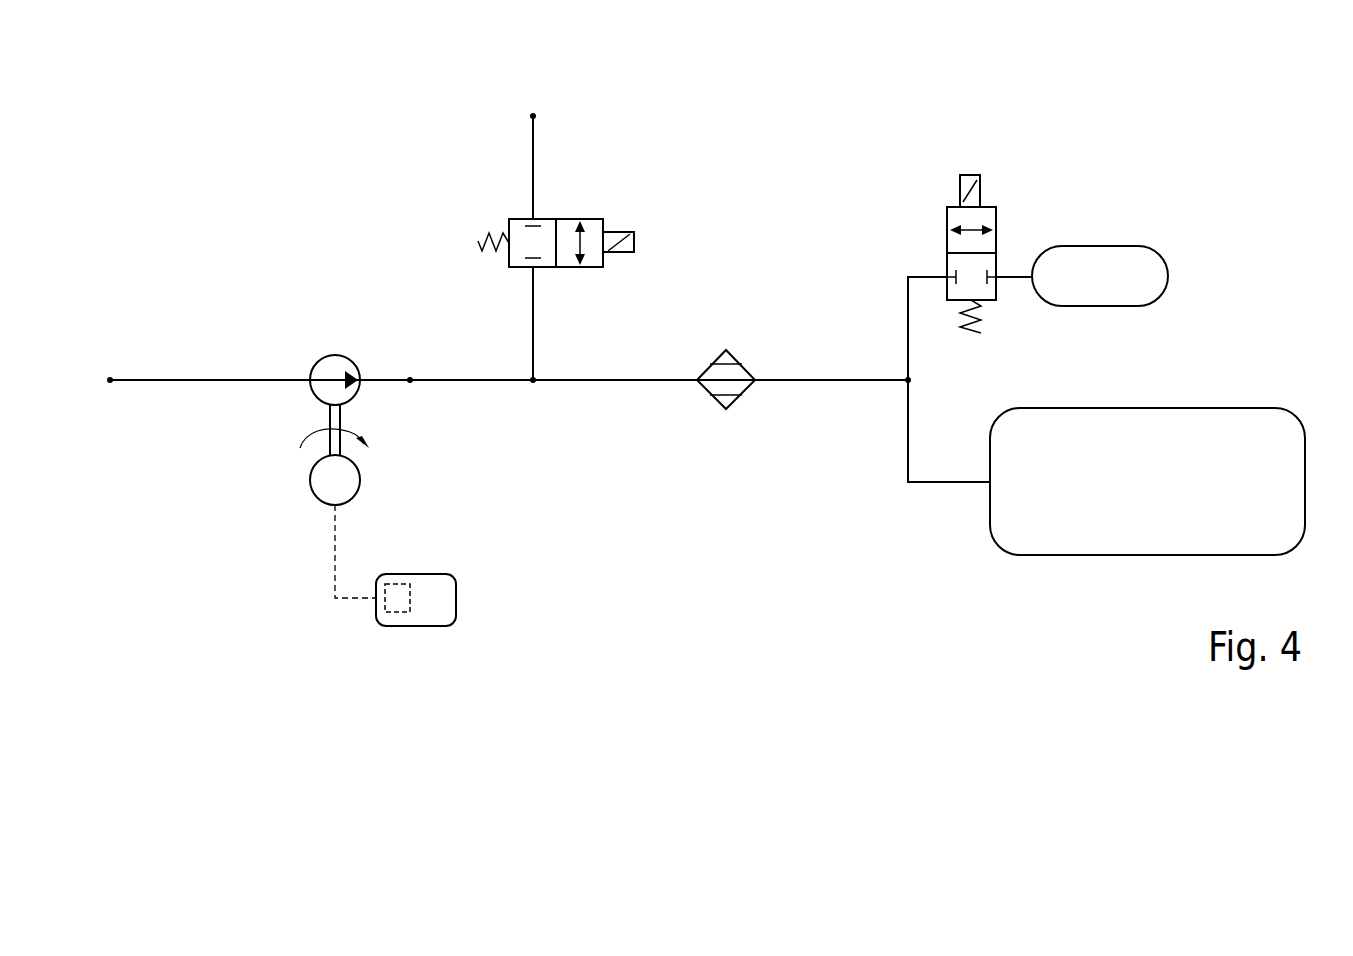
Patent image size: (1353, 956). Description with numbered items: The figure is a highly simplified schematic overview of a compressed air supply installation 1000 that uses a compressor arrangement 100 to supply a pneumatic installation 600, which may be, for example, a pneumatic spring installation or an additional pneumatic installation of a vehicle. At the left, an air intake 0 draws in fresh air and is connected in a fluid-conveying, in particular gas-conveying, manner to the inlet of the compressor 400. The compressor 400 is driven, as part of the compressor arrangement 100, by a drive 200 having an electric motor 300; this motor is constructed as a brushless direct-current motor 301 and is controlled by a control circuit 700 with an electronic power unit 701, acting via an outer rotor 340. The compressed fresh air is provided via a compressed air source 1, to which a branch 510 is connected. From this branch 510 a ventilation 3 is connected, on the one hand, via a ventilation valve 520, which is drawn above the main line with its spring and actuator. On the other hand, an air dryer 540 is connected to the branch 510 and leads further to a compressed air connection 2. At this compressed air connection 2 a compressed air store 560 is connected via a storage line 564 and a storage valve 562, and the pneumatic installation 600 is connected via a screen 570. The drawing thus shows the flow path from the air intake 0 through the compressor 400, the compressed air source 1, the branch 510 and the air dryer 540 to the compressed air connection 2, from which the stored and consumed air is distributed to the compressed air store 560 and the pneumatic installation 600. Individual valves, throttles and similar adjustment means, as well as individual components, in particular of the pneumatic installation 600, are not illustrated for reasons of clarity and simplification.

The compressed air supply installation 1000 is at (220, 147).
The air intake 0 is at (110, 378).
The compressed air source 1 is at (410, 378).
The compressed air connection 2 is at (906, 378).
The ventilation 3 is at (532, 114).
The compressor arrangement 100 is at (262, 452).
The drive 200 is at (274, 495).
The electric motor 300 is at (378, 478).
The brushless direct-current motor 301 is at (355, 496).
The outer rotor 340 is at (346, 449).
The compressor 400 is at (322, 357).
The branch 510 is at (533, 383).
The ventilation valve 520 is at (512, 218).
The air dryer 540 is at (742, 392).
The compressed air store 560 is at (1052, 245).
The storage valve 562 is at (945, 220).
The storage line 564 is at (909, 345).
The screen 570 is at (907, 450).
The pneumatic installation 600 is at (988, 513).
The control circuit 700 is at (458, 598).
The electronic power unit 701 is at (392, 614).